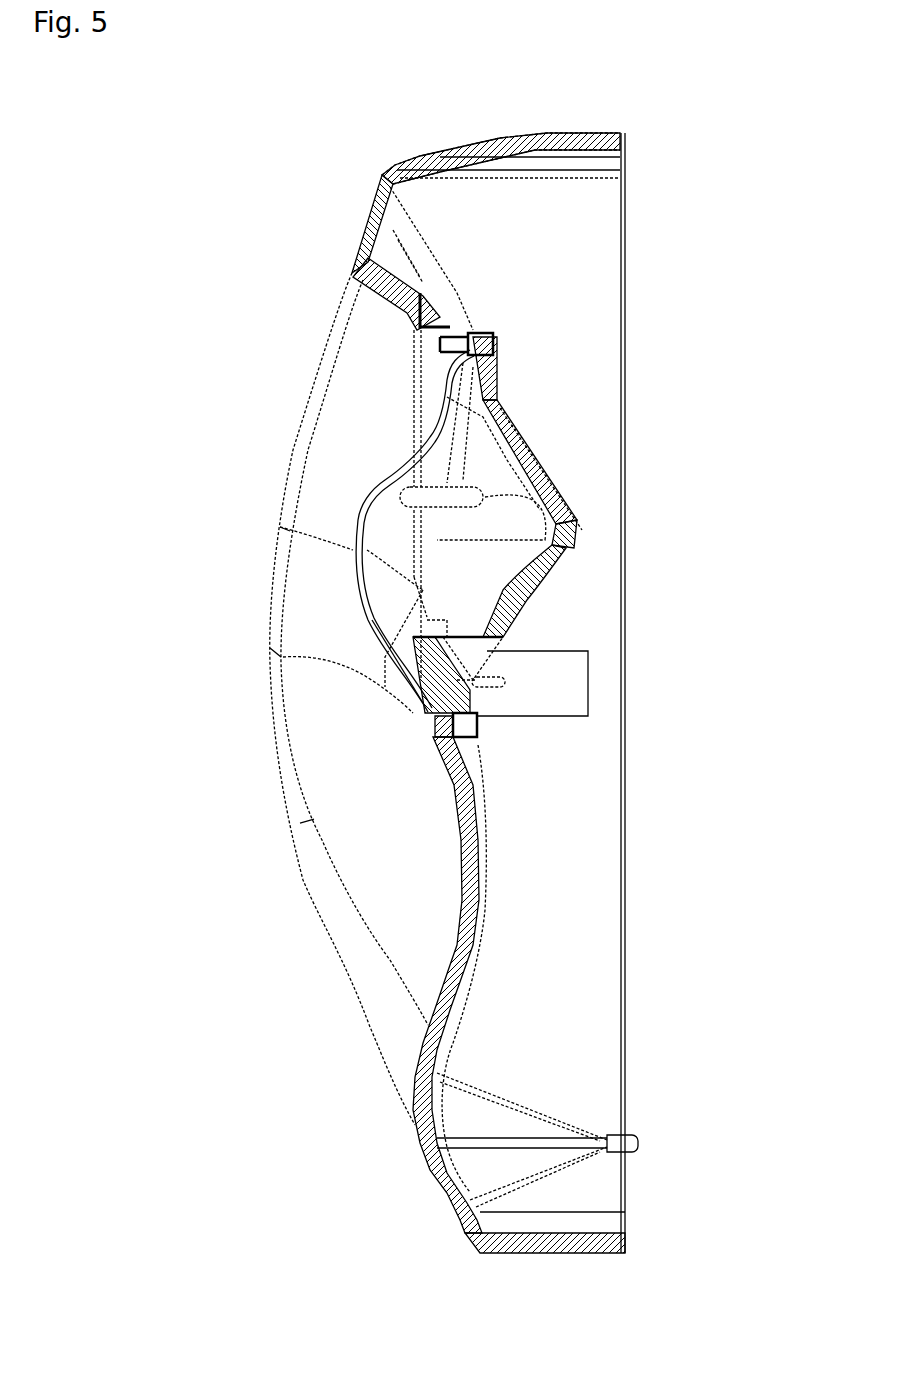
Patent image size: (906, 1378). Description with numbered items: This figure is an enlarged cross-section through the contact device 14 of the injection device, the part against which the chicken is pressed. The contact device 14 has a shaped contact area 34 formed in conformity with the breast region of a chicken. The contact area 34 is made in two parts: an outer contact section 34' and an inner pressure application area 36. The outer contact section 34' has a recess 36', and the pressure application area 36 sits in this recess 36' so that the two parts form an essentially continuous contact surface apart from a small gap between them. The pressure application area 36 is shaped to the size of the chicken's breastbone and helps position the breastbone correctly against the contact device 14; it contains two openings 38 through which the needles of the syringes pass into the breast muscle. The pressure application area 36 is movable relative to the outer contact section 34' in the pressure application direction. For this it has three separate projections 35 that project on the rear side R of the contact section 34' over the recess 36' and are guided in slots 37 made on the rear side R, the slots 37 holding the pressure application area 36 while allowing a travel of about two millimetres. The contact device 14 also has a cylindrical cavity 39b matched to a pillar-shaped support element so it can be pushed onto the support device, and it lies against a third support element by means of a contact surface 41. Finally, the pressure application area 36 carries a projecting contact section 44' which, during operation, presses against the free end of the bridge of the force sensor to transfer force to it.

The contact device 14 is at (437, 155).
The contact area 34 is at (342, 699).
The outer contact section 34' is at (361, 652).
The projections 35 is at (480, 355).
The pressure application area 36 is at (623, 603).
The recess 36' is at (341, 531).
The slots 37 is at (493, 352).
The openings 38 is at (427, 503).
The cylindrical cavity 39b is at (577, 688).
The contact surface 41 is at (430, 313).
The projecting contact section 44' is at (663, 499).
The rear side R is at (477, 810).